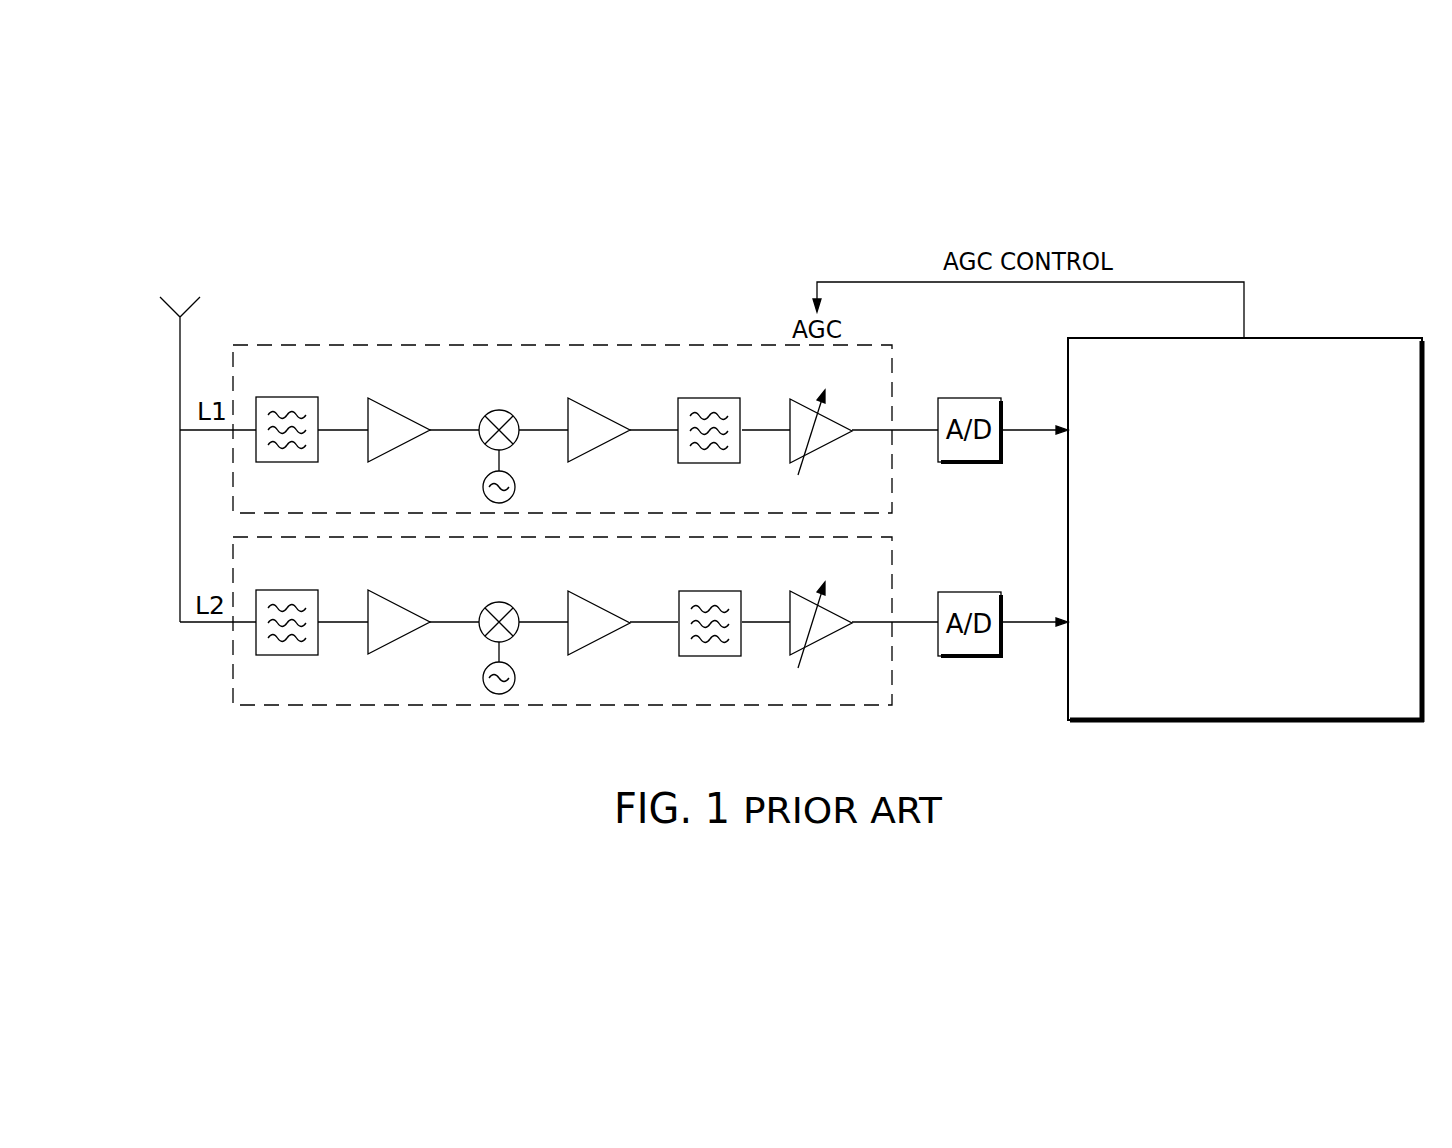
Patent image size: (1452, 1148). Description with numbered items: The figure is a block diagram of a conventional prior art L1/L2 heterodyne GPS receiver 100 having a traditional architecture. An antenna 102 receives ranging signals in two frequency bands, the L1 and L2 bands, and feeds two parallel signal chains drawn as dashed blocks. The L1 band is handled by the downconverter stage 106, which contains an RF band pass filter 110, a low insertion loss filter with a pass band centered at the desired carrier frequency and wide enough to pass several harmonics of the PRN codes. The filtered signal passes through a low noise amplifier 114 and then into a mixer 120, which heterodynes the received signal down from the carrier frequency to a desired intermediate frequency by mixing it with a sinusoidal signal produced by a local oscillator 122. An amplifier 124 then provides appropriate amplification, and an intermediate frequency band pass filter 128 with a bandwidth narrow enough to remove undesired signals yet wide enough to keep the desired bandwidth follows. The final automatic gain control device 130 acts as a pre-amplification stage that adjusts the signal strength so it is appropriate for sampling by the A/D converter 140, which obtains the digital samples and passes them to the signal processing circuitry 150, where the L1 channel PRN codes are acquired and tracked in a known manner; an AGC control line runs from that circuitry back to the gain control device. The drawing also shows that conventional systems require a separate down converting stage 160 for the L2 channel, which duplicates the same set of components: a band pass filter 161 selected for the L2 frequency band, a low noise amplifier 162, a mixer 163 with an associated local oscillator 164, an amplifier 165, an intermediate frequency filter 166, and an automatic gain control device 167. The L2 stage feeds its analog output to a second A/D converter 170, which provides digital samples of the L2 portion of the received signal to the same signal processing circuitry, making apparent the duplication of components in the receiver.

The receiver 100 is at (550, 285).
The antenna 102 is at (205, 288).
The downconverter stage 106 is at (222, 472).
The RF band pass filter 110 is at (288, 397).
The low noise amplifier 114 is at (381, 402).
The mixer 120 is at (501, 410).
The local oscillator 122 is at (516, 487).
The amplifier 124 is at (585, 402).
The intermediate frequency band pass filter 128 is at (709, 398).
The automatic gain control device 130 is at (807, 404).
The A/D converter 140 is at (971, 398).
The signal processing circuitry 150 is at (1355, 338).
The down converting stage 160 is at (222, 665).
The band pass filter 161 is at (289, 590).
The low noise amplifier 162 is at (382, 595).
The mixer 163 is at (500, 602).
The local oscillator 164 is at (516, 680).
The amplifier 165 is at (585, 595).
The intermediate frequency filter 166 is at (709, 591).
The automatic gain control device 167 is at (807, 597).
The A/D converter 170 is at (971, 592).